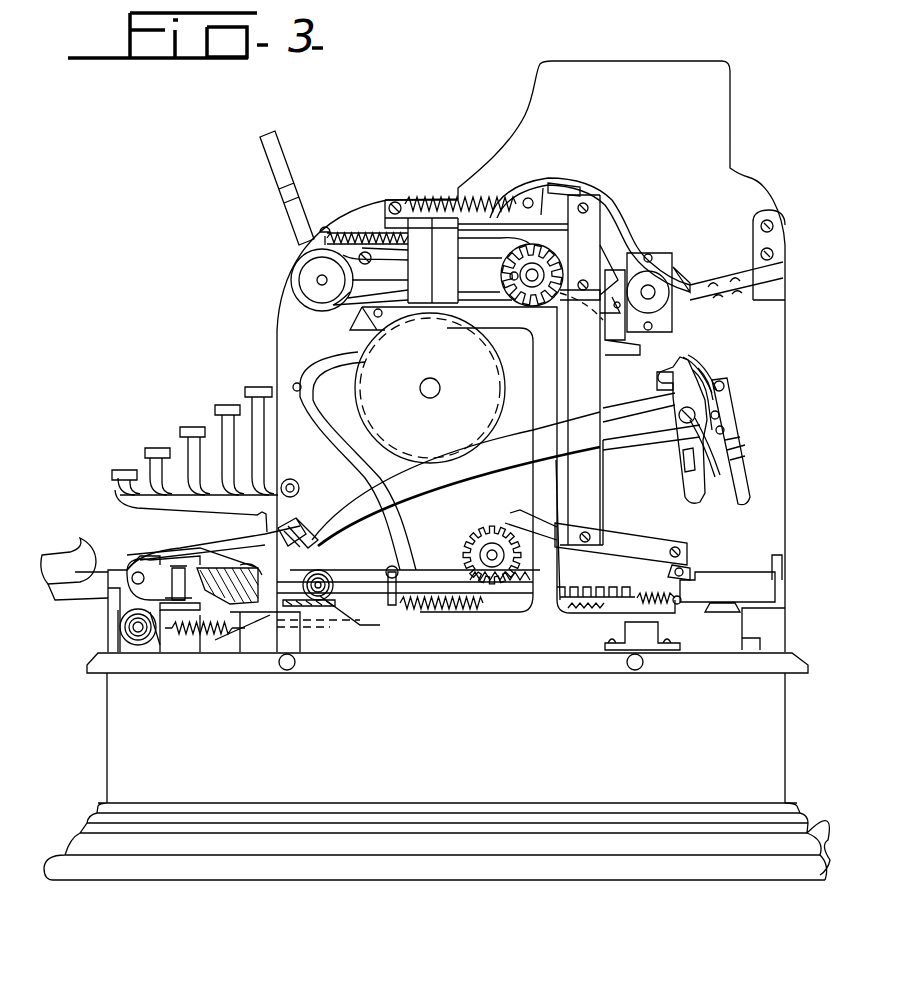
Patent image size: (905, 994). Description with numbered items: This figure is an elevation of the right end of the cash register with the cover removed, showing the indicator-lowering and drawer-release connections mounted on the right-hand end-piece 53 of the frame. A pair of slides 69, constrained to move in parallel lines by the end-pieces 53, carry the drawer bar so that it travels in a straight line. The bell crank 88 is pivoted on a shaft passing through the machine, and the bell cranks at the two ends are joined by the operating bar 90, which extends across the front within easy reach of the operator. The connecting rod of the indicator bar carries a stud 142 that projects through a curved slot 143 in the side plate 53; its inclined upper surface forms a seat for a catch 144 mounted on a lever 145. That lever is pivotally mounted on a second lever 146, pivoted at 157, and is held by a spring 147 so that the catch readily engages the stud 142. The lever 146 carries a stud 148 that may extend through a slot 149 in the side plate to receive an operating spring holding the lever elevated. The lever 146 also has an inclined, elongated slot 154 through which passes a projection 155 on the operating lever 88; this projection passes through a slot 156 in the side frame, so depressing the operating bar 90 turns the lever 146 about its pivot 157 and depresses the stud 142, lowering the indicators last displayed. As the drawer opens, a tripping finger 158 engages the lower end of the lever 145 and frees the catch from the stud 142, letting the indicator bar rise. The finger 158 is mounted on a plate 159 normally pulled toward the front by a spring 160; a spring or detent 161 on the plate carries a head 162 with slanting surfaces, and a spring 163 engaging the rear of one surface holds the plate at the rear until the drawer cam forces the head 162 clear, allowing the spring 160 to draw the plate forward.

The end-piece of the frame 53 is at (772, 475).
The slides 69 is at (620, 607).
The bell crank 88 is at (75, 587).
The operating bar 90 is at (63, 550).
The stud 142 is at (697, 383).
The curved slot 143 is at (700, 500).
The catch 144 is at (685, 360).
The lever 145 is at (735, 452).
The lever 146 is at (730, 410).
The spring 147 is at (708, 375).
The stud 148 is at (724, 388).
The slot 149 is at (740, 467).
The inclined and elongated slot 154 is at (305, 525).
The projection 155 is at (307, 545).
The slot 156 is at (288, 517).
The pivot 157 is at (203, 553).
The tripping finger 158 is at (782, 570).
The plate 159 is at (728, 590).
The spring 160 is at (667, 610).
The spring or detent 161 is at (328, 605).
The head 162 is at (323, 602).
The spring 163 is at (313, 618).